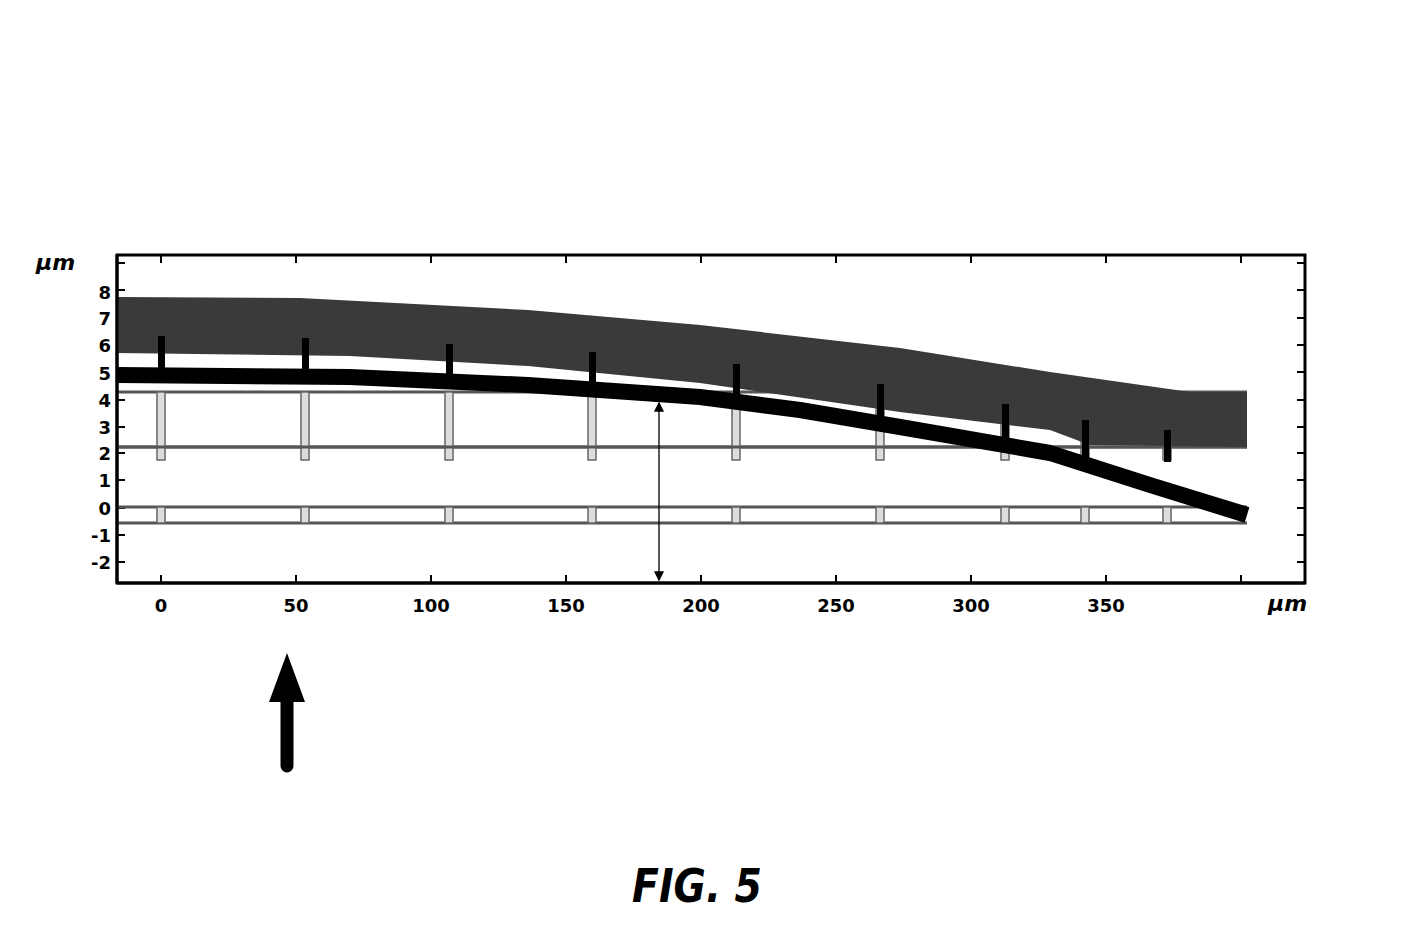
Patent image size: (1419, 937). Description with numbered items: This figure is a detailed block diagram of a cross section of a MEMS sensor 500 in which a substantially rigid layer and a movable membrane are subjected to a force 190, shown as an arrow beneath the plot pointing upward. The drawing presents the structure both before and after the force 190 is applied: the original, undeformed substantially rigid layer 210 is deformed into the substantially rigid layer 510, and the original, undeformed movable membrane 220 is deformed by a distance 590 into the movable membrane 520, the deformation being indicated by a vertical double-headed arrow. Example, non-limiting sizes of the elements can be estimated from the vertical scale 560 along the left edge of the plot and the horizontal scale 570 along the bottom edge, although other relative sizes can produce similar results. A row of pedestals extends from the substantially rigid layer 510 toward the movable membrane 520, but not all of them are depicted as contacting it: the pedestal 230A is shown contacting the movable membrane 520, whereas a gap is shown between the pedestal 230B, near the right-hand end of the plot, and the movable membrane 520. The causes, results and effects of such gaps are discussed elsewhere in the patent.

The MEMS sensor 500 is at (162, 41).
The vertical scale 560 is at (95, 245).
The horizontal scale 570 is at (1147, 615).
The substantially rigid layer 510 is at (528, 310).
The movable membrane 520 is at (1210, 498).
The distance 590 is at (659, 481).
The pedestal 230A is at (306, 460).
The pedestal 230B is at (1167, 452).
The substantially rigid layer 210 is at (483, 447).
The movable membrane 220 is at (845, 523).
The force 190 is at (313, 713).